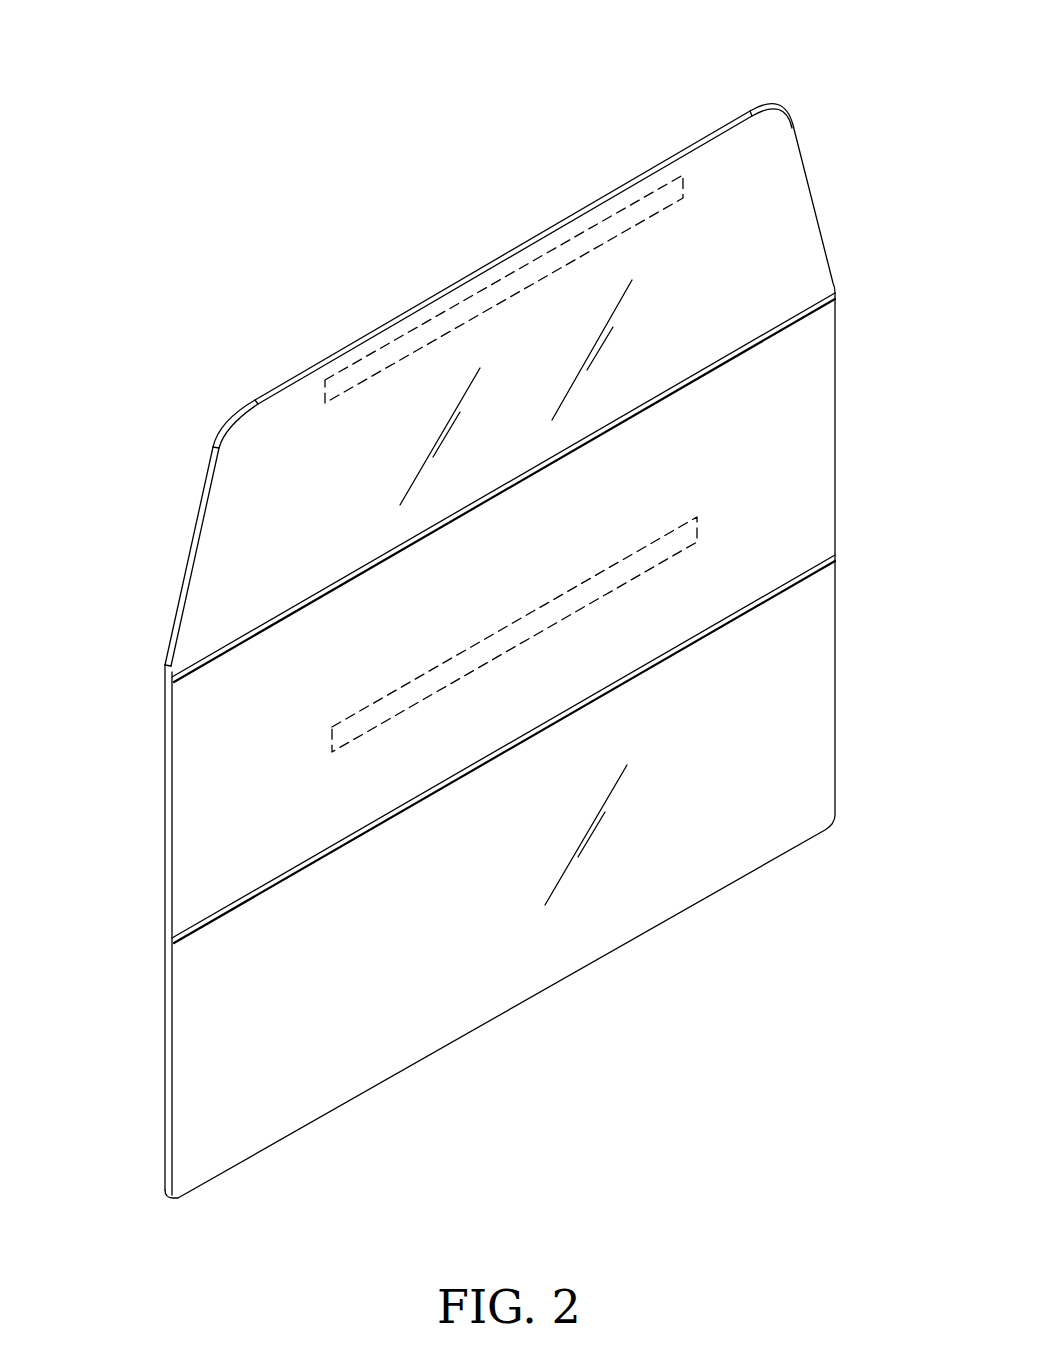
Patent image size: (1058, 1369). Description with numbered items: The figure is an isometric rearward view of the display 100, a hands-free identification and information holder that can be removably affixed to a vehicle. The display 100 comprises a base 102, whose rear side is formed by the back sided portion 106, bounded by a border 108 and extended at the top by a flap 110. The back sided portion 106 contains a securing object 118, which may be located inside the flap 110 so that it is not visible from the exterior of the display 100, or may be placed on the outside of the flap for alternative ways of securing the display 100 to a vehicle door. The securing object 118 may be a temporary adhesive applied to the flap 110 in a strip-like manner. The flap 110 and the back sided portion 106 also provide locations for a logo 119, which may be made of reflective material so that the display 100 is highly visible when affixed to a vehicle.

The display 100 is at (504, 603).
The base 102 is at (333, 1112).
The back sided portion 106 is at (203, 824).
The border 108 is at (163, 1007).
The flap 110 is at (243, 488).
The securing object 118 is at (512, 283).
The logo 119 is at (763, 850).